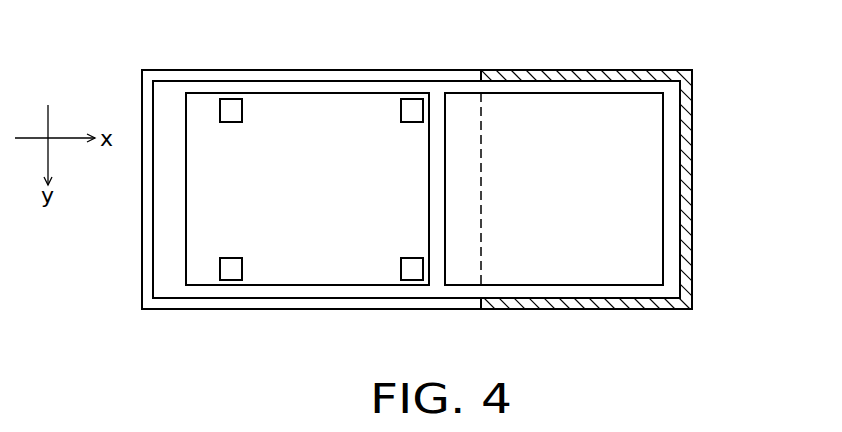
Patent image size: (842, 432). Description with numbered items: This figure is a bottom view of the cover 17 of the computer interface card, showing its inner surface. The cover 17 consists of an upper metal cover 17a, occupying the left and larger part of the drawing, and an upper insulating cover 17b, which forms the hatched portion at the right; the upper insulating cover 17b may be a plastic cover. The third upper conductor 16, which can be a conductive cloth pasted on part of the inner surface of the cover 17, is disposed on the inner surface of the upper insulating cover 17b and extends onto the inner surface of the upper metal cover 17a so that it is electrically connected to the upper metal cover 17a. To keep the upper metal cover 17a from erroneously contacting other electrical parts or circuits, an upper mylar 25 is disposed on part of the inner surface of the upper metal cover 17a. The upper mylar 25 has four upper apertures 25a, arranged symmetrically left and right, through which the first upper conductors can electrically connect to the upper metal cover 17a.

The third upper conductor 16 is at (632, 235).
The cover 17 is at (668, 70).
The upper metal cover 17a is at (300, 76).
The upper insulating cover 17b is at (630, 72).
The upper mylar 25 is at (359, 145).
The upper apertures 25a is at (232, 99).